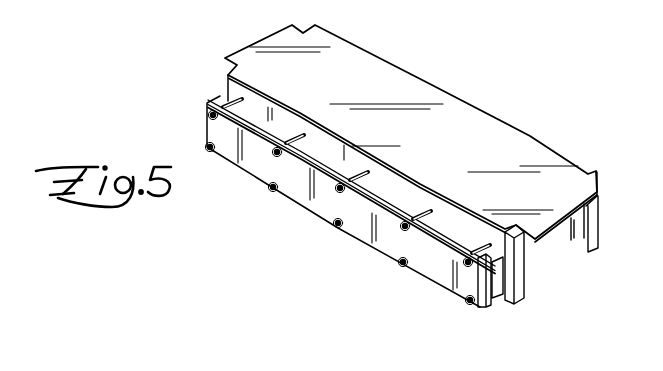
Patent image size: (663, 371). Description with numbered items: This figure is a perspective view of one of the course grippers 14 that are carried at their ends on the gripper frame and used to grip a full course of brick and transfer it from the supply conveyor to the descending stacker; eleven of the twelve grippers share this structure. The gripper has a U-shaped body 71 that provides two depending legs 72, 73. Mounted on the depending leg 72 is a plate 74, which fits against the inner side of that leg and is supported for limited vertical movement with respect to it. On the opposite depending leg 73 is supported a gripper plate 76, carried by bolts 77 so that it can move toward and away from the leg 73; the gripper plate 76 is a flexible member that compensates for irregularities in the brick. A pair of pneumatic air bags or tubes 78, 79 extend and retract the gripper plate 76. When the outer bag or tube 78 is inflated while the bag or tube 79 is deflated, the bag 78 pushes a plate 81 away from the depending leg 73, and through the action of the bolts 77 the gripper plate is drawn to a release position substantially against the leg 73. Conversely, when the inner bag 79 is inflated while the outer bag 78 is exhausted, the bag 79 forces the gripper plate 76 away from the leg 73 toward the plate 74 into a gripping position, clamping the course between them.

The course gripper 14 is at (423, 75).
The U-shaped body 71 is at (471, 131).
The depending leg 72 is at (598, 214).
The depending leg 73 is at (262, 112).
The plate 74 is at (580, 243).
The gripper plate 76 is at (521, 258).
The bolts 77 is at (420, 210).
The pneumatic air bag or tube 78 is at (500, 304).
The pneumatic air bag or tube 79 is at (519, 272).
The plate 81 is at (368, 228).